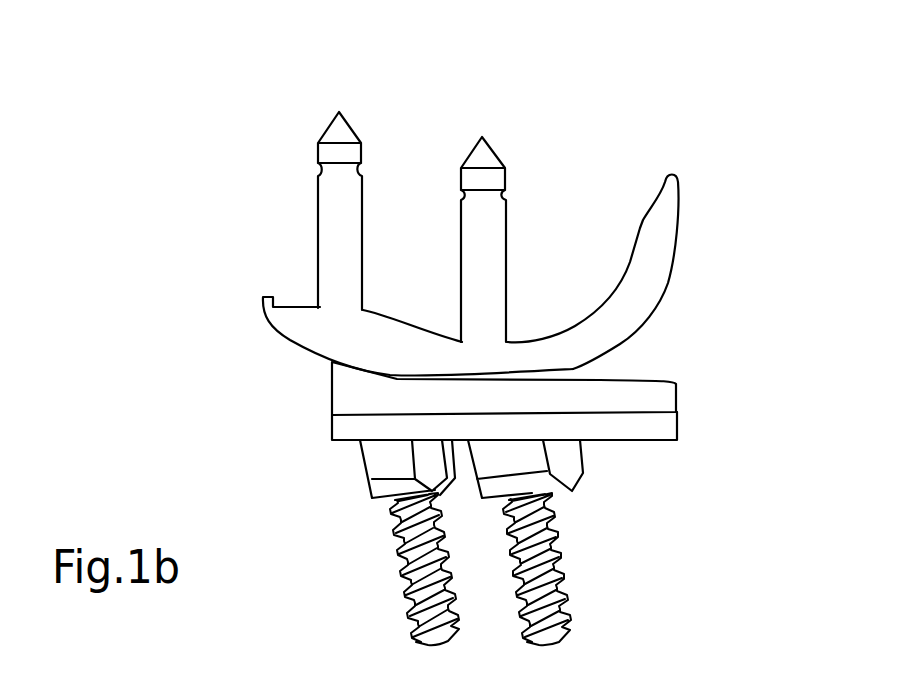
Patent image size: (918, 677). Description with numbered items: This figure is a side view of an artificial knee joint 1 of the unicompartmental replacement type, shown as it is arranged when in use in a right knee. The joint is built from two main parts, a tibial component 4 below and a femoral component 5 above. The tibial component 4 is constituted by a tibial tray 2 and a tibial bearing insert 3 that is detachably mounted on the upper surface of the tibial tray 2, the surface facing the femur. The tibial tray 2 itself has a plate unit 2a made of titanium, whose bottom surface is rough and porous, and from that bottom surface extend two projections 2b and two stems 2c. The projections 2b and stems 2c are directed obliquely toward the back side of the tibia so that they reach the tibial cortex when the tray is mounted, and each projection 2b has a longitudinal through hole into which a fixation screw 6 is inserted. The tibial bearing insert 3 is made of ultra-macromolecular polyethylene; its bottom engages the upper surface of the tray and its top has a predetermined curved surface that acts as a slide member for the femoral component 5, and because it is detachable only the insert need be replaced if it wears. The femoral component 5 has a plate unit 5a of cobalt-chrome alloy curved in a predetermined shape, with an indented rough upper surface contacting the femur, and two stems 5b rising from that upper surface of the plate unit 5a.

The artificial knee joint 1 is at (677, 131).
The tibial tray 2 is at (713, 413).
The plate unit 2a is at (350, 427).
The projections 2b is at (365, 469).
The stems 2c is at (565, 466).
The tibial bearing insert 3 is at (712, 358).
The tibial component 4 is at (805, 367).
The femoral component 5 is at (702, 155).
The plate unit 5a is at (327, 328).
The stems 5b is at (335, 225).
The fixation screw 6 is at (427, 573).